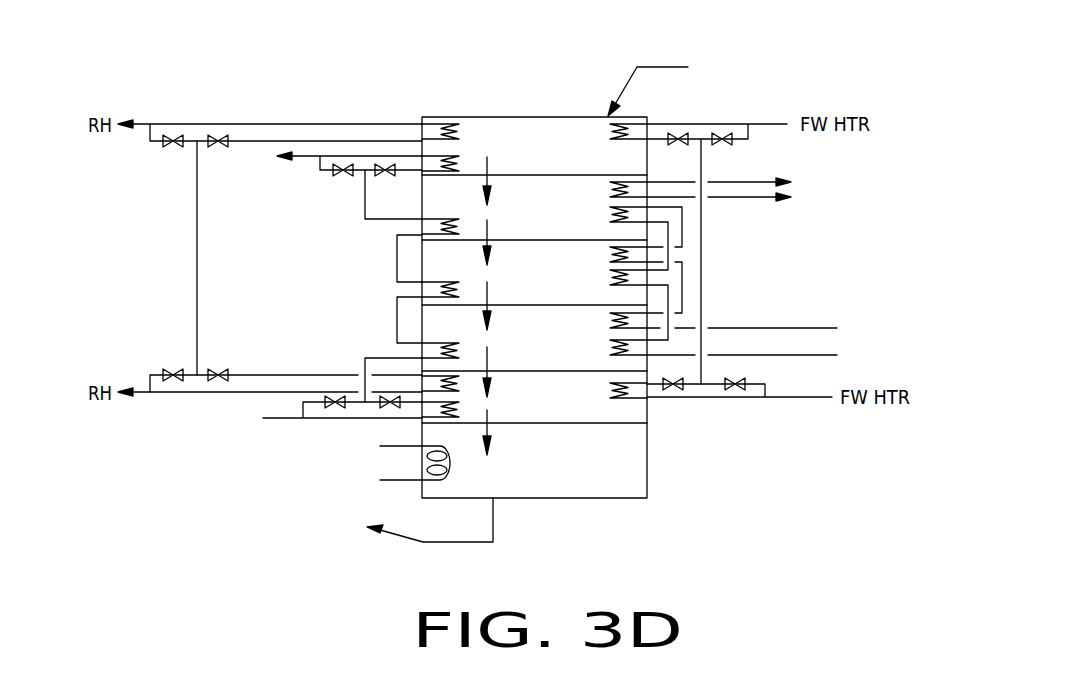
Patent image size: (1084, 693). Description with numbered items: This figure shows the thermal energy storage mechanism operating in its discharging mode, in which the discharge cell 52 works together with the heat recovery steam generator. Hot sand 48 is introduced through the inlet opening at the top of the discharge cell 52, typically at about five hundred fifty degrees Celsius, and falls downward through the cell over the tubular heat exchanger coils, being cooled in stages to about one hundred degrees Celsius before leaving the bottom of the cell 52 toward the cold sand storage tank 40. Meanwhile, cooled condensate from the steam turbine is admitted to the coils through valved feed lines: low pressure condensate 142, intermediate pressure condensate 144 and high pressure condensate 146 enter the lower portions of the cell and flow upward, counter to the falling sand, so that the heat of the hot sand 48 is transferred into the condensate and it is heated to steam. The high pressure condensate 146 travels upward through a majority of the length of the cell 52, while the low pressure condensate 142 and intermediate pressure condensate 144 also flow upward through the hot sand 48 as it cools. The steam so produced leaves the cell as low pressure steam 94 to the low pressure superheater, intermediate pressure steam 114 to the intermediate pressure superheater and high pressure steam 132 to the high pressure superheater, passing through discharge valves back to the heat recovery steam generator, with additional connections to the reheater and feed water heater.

The hot sand 48 is at (626, 85).
The discharge cell 52 is at (486, 117).
The intermediate pressure steam 114 is at (755, 180).
The low pressure steam 94 is at (757, 201).
The intermediate pressure condensate 144 is at (775, 328).
The low pressure condensate 142 is at (765, 356).
The high pressure steam 132 is at (310, 160).
The high pressure condensate 146 is at (320, 420).
The cold sand storage tank 40 is at (455, 545).